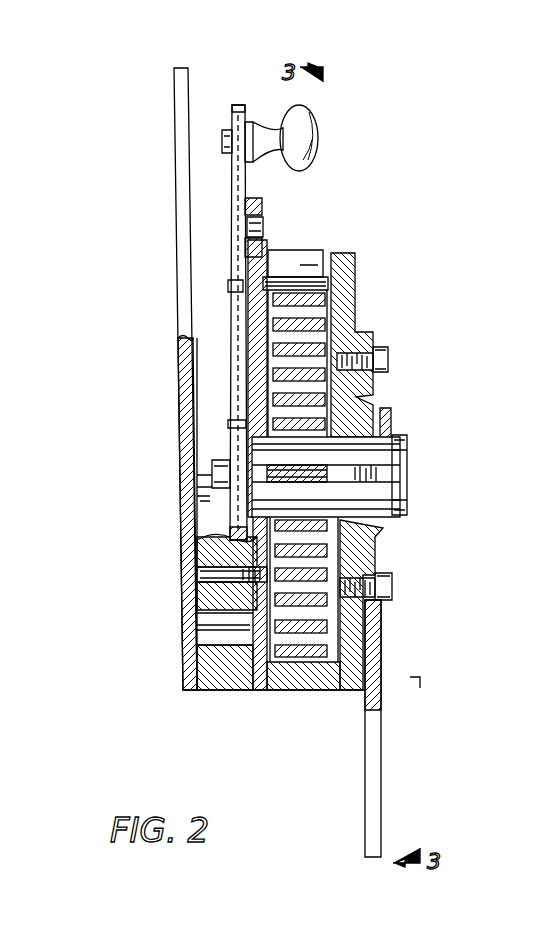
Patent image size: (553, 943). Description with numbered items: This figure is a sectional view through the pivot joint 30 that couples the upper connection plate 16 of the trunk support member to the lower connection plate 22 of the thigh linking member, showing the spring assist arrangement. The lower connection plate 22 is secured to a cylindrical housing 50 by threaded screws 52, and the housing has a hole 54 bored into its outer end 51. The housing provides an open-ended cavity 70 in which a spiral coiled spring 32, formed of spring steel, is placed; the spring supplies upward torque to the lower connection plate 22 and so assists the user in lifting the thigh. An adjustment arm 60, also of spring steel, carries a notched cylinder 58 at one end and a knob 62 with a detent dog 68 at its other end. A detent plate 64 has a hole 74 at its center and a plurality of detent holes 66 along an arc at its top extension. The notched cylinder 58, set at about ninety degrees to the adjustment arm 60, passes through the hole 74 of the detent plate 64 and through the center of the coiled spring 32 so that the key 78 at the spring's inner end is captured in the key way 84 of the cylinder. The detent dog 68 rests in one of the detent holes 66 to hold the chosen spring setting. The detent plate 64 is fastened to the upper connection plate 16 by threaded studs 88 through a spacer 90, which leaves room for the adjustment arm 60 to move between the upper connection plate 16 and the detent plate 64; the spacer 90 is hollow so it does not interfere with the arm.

The upper connection plate 16 is at (178, 232).
The lower connection plate 22 is at (372, 765).
The pivot joint 30 is at (432, 335).
The spiral coiled spring 32 is at (313, 317).
The cylindrical housing 50 is at (347, 315).
The outer end 51 is at (367, 633).
The threaded screws 52 is at (370, 358).
The hole 54 is at (393, 500).
The notched cylinder 58 is at (380, 427).
The adjustment arm 60 is at (227, 287).
The knob 62 is at (310, 132).
The detent plate 64 is at (255, 293).
The detent holes 66 is at (262, 213).
The detent dog 68 is at (263, 227).
The cavity 70 is at (293, 663).
The hole 74 is at (257, 507).
The key 78 is at (293, 468).
The key way 84 is at (383, 473).
The threaded studs 88 is at (217, 580).
The spacer 90 is at (222, 690).